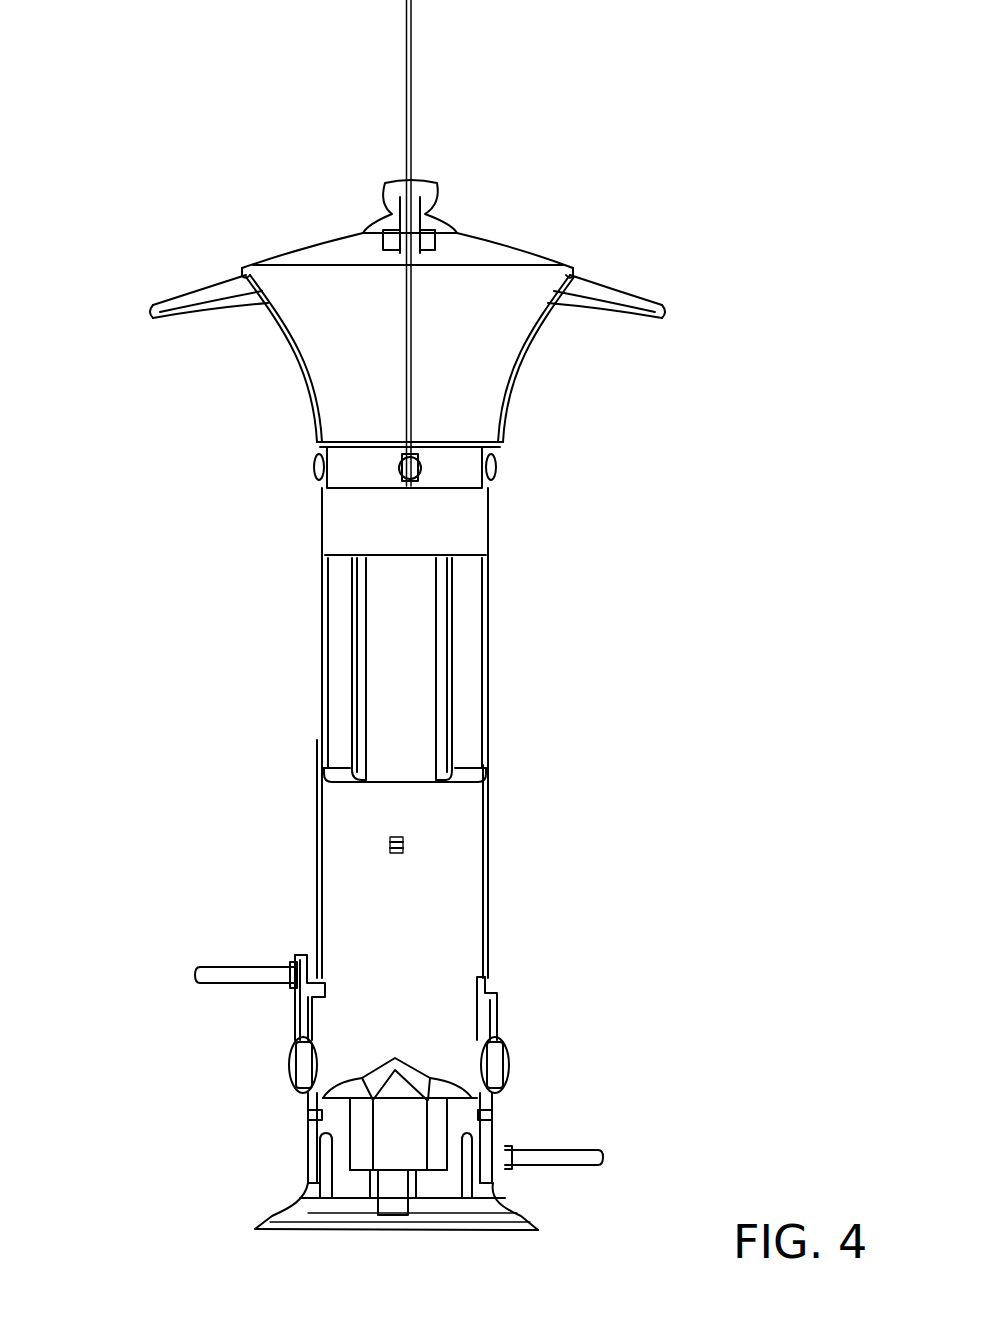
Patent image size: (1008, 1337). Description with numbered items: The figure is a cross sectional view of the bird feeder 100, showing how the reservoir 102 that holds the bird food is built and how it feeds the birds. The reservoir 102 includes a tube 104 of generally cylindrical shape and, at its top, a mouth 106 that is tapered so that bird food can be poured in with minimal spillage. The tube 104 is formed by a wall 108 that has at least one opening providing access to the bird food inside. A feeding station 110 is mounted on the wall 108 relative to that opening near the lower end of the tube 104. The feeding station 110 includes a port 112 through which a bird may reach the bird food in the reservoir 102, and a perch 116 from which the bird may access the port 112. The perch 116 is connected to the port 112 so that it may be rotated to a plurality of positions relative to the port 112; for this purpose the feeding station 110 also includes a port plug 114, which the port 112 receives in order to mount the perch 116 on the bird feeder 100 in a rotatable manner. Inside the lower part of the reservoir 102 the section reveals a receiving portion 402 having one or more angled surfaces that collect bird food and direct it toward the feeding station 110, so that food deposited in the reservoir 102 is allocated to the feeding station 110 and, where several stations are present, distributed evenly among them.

The bird feeder 100 is at (361, 615).
The reservoir 102 is at (400, 712).
The tube 104 is at (567, 676).
The mouth 106 is at (567, 390).
The wall 108 is at (320, 808).
The feeding station 110 is at (324, 1072).
The port 112 is at (310, 1130).
The port plug 114 is at (293, 1058).
The perch 116 is at (225, 966).
The receiving portion 402 is at (368, 1093).